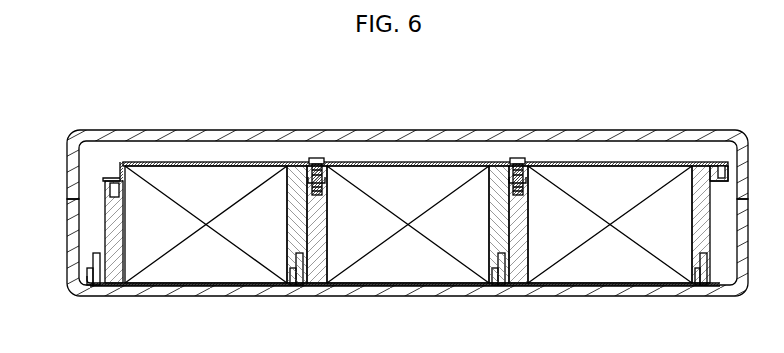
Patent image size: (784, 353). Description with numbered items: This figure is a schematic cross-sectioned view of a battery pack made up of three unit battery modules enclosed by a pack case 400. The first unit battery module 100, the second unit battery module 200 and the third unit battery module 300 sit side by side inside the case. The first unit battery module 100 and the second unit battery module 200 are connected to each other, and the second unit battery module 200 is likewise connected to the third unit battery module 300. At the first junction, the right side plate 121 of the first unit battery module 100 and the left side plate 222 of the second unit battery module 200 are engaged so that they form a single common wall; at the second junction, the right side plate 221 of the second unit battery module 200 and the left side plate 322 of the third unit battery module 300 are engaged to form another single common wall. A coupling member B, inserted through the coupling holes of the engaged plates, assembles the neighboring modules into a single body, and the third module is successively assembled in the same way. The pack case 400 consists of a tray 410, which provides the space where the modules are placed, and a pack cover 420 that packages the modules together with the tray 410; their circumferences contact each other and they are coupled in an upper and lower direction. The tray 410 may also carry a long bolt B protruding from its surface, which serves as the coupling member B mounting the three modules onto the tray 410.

The first unit battery module 100 is at (209, 160).
The second unit battery module 200 is at (411, 160).
The third unit battery module 300 is at (613, 160).
The right side plate 121 is at (283, 218).
The left side plate 222 is at (333, 243).
The right side plate 221 is at (483, 219).
The left side plate 322 is at (538, 243).
The pack case 400 is at (383, 216).
The tray 410 is at (179, 296).
The pack cover 420 is at (696, 130).
The coupling member B is at (316, 158).